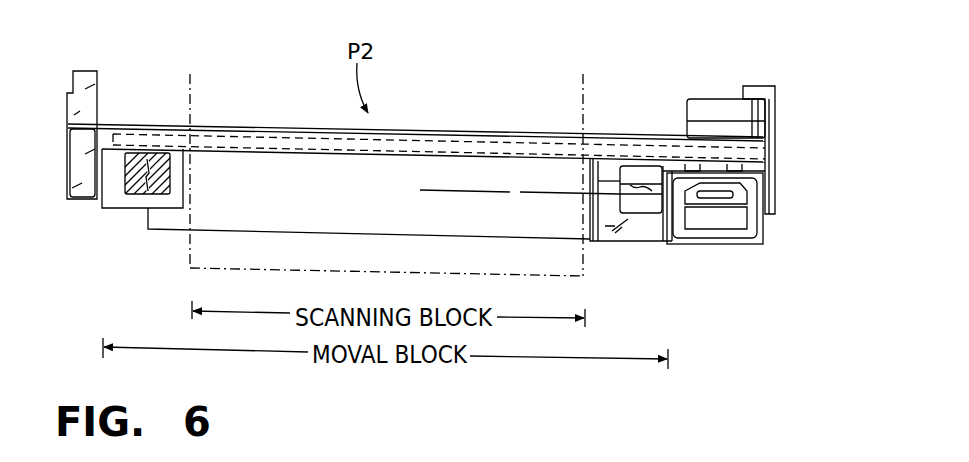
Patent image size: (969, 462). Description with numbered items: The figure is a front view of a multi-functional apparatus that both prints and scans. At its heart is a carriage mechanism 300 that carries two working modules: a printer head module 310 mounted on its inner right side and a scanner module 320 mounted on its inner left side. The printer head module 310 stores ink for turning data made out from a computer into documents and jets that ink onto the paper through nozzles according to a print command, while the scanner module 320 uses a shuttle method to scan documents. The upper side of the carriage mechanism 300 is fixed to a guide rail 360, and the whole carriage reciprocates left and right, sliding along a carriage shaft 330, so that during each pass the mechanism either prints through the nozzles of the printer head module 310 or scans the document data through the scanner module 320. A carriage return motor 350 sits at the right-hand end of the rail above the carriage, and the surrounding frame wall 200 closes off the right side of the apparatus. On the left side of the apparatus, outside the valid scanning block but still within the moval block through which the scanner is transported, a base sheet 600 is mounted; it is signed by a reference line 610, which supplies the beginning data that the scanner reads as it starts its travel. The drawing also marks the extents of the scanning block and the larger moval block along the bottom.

The frame side wall 200 is at (758, 170).
The carriage mechanism 300 is at (678, 247).
The printer head module 310 is at (728, 246).
The scanner module 320 is at (646, 210).
The carriage shaft 330 is at (600, 133).
The carriage return motor 350 is at (712, 100).
The guide rail 360 is at (642, 150).
The base sheet 600 is at (121, 185).
The reference line 610 is at (143, 188).